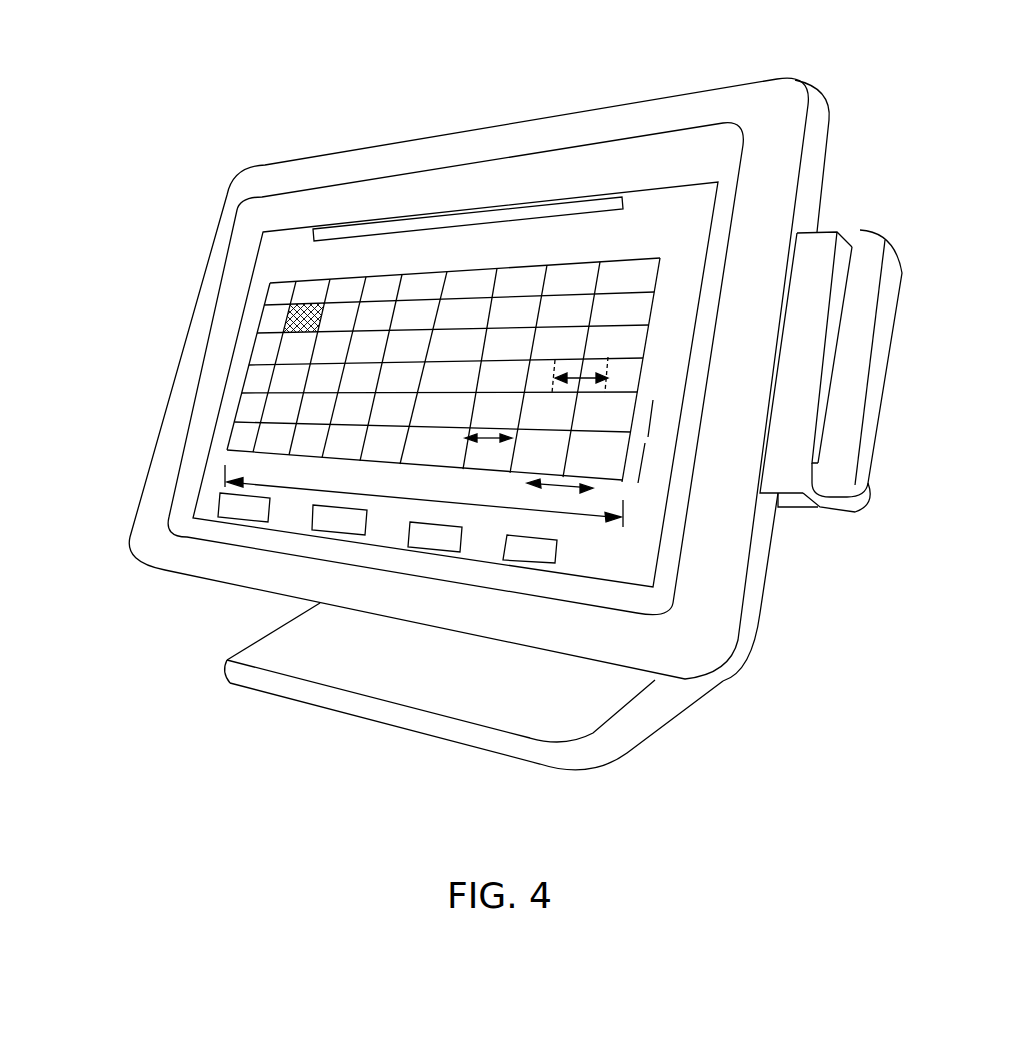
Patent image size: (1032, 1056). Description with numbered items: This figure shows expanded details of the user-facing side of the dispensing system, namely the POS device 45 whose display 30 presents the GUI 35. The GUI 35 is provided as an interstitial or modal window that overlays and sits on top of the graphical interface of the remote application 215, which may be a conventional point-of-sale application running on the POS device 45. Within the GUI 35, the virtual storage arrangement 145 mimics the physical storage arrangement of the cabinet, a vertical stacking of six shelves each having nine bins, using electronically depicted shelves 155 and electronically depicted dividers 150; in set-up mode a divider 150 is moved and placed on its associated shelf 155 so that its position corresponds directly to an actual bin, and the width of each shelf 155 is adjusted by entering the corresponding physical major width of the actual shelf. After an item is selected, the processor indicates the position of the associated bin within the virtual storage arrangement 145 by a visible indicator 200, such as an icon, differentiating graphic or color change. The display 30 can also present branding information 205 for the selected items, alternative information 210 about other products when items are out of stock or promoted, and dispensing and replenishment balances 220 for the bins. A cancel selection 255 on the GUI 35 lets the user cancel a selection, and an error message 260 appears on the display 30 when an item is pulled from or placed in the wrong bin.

The POS device 45 is at (104, 518).
The display 30 is at (583, 589).
The GUI 35 is at (248, 221).
The remote application 215 is at (542, 176).
The virtual storage arrangement 145 is at (660, 246).
The error message 260 is at (414, 226).
The visible indicator 200 is at (284, 325).
The electronically depicted divider 150 is at (583, 372).
The electronically depicted shelf 155 is at (653, 417).
The branding information 205 is at (244, 510).
The alternative information 210 is at (336, 522).
The dispensing and replenishment balances 220 is at (434, 543).
The cancel selection 255 is at (526, 557).